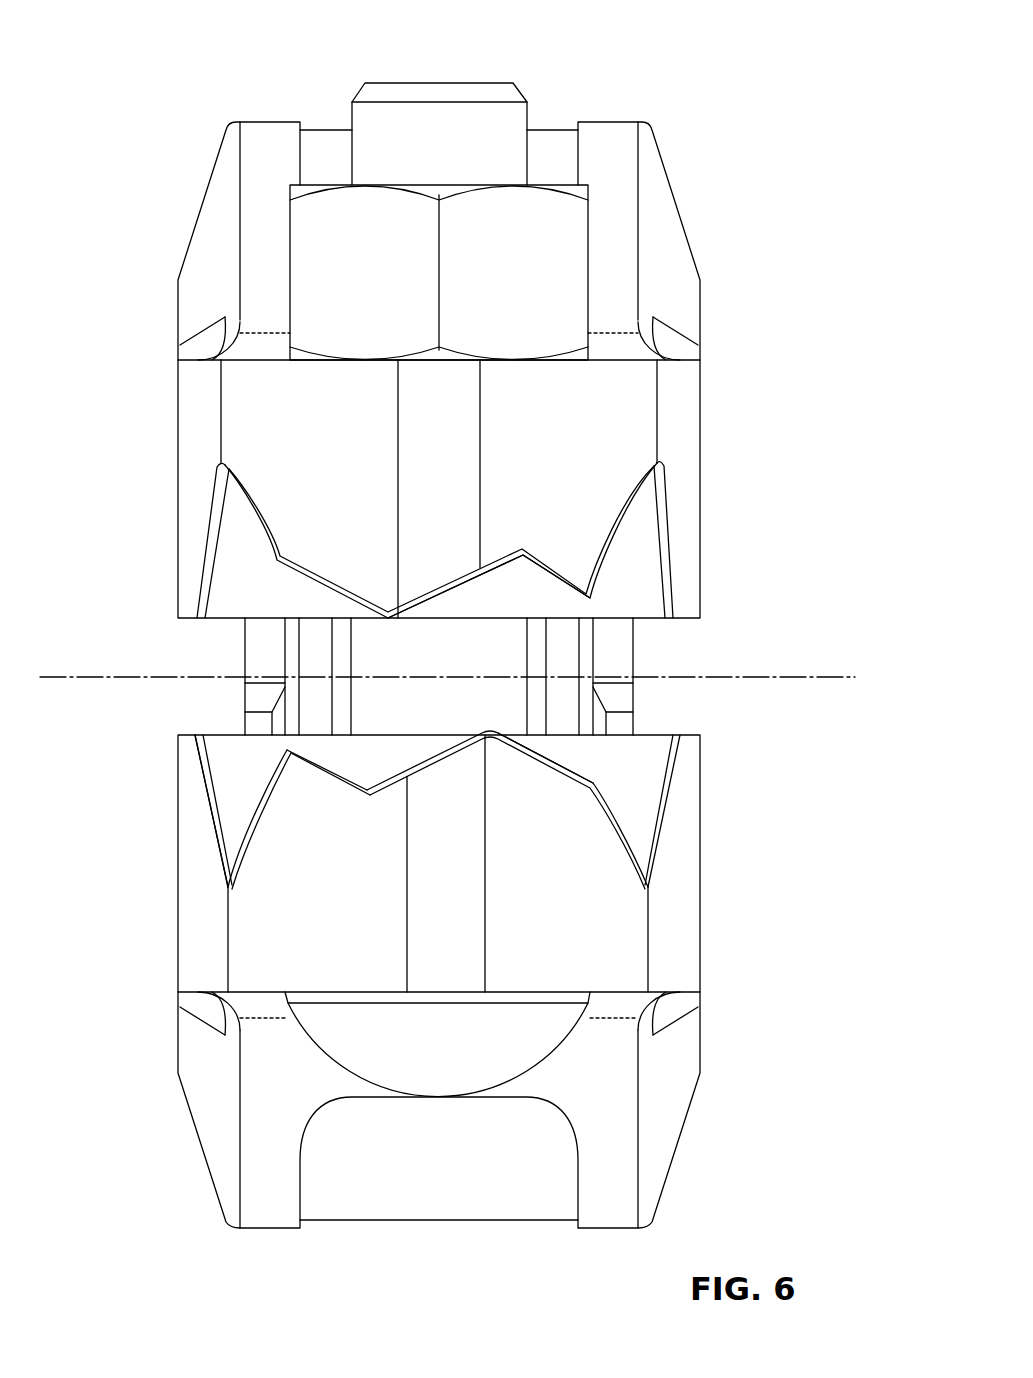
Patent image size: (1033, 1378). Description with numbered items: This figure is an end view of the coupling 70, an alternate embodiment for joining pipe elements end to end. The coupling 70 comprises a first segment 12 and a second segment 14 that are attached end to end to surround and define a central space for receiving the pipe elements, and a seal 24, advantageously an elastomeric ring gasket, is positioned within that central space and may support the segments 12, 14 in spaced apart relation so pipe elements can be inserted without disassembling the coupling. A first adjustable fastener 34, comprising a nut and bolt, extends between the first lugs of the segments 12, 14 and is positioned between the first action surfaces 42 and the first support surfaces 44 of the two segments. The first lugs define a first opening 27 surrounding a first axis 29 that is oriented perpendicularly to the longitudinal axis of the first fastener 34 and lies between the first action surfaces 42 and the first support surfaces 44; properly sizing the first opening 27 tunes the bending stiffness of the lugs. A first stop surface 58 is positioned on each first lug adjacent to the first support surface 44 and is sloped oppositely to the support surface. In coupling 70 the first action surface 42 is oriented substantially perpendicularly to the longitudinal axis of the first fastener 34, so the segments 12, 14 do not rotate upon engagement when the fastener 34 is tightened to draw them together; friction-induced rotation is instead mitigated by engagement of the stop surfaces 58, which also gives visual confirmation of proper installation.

The coupling 70 is at (763, 60).
The second segment 14 is at (445, 323).
The first adjustable fastener 34 is at (473, 102).
The first support surface 44 is at (450, 592).
The first stop surface 58 is at (553, 578).
The first action surface 42 is at (220, 620).
The seal 24 is at (453, 679).
The first axis 29 is at (800, 678).
The first opening 27 is at (228, 842).
The first segment 12 is at (257, 1205).